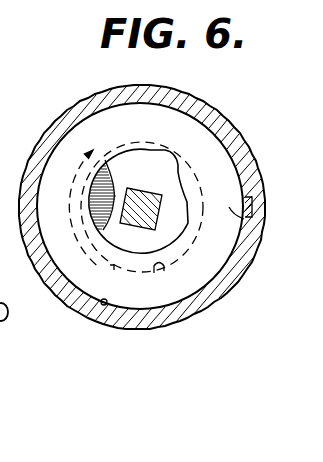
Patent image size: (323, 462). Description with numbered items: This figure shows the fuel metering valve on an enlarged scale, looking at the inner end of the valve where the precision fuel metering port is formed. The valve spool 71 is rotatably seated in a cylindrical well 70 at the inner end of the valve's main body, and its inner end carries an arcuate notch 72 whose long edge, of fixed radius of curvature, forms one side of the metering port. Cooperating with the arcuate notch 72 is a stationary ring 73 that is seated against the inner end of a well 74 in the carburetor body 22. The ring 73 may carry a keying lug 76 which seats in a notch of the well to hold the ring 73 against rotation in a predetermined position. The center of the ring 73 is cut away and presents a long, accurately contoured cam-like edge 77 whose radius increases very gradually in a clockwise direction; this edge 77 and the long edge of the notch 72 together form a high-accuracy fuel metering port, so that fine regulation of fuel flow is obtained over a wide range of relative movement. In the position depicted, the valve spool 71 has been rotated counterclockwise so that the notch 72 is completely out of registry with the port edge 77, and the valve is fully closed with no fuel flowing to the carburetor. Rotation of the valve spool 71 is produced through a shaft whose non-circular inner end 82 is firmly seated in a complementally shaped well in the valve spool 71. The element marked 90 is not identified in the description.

The carburetor body 22 is at (176, 328).
The stationary ring 73 is at (128, 309).
The well 74 is at (103, 306).
The keying lug 76 is at (243, 214).
The arcuate notch 72 is at (100, 236).
The non-circular inner end 82 is at (146, 224).
The cam-like edge 77 is at (146, 144).
The valve spool 71 is at (112, 266).
The cylindrical well 70 is at (154, 273).
The element 90 is at (8, 263).